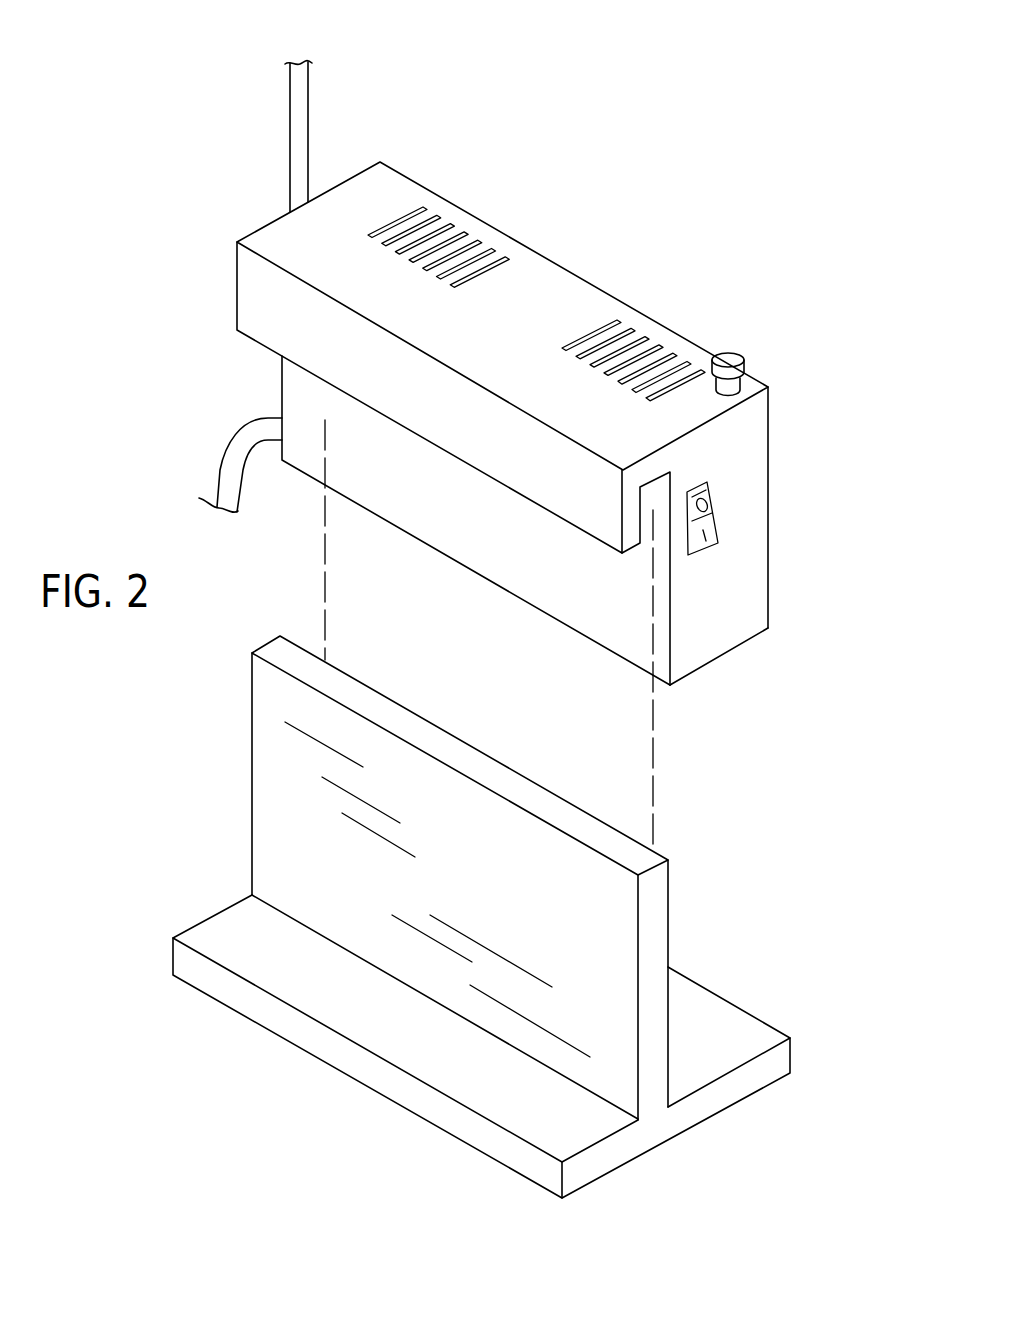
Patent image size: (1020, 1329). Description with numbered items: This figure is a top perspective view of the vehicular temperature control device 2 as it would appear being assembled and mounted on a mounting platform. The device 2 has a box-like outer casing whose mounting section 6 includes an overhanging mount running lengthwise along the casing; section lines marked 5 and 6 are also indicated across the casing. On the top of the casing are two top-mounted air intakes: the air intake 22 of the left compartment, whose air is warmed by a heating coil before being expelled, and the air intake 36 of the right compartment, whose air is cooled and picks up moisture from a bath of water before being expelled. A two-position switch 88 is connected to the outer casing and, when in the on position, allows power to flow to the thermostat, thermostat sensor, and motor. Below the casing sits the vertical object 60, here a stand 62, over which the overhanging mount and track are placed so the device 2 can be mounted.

The vehicular temperature control device 2 is at (455, 122).
The section line 5- 5 is at (633, 278).
The mounting section 6 is at (637, 230).
The air intake 22 is at (462, 225).
The air intake 36 is at (645, 330).
The vertical object 60 is at (657, 915).
The stand 62 is at (563, 855).
The two-position switch 88 is at (710, 512).